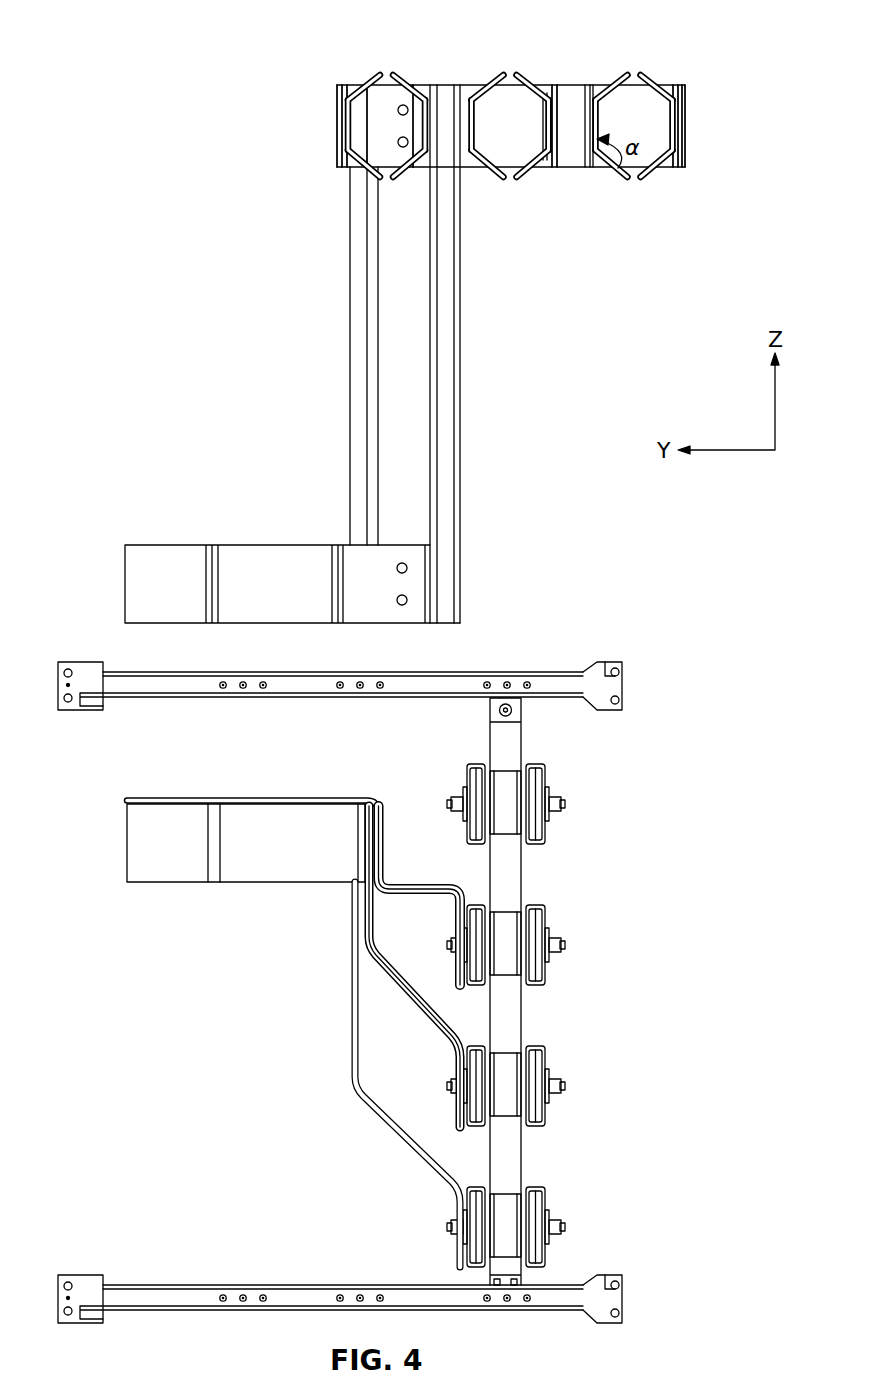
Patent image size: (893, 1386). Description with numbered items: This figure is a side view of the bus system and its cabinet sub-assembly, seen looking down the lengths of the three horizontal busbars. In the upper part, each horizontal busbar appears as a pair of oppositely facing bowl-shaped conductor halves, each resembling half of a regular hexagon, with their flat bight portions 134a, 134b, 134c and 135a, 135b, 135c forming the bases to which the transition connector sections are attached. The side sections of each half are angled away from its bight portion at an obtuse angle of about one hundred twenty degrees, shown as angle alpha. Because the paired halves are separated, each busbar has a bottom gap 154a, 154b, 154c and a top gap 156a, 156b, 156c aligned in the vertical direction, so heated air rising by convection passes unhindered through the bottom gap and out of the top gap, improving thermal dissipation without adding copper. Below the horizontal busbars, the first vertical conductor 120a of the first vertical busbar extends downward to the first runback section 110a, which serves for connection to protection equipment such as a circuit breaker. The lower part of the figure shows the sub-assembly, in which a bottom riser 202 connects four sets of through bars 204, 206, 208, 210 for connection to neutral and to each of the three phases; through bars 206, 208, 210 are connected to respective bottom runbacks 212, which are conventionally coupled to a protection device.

The first runback section 110a is at (305, 596).
The first vertical conductor 120a is at (397, 405).
The bight portion 134a is at (428, 128).
The bight portion 134b is at (473, 133).
The bight portion 134c is at (597, 128).
The bight portion 135a is at (345, 125).
The bight portion 135b is at (548, 122).
The bight portion 135c is at (676, 128).
The gap 154a is at (386, 182).
The gap 154b is at (510, 182).
The gap 154c is at (634, 182).
The gap 156a is at (386, 70).
The gap 156b is at (510, 70).
The gap 156c is at (634, 70).
The bottom riser 202 is at (522, 877).
The through bar 204 is at (466, 765).
The through bar 206 is at (470, 900).
The through bar 208 is at (472, 1045).
The through bar 210 is at (472, 1185).
The bottom runback 212 is at (110, 836).